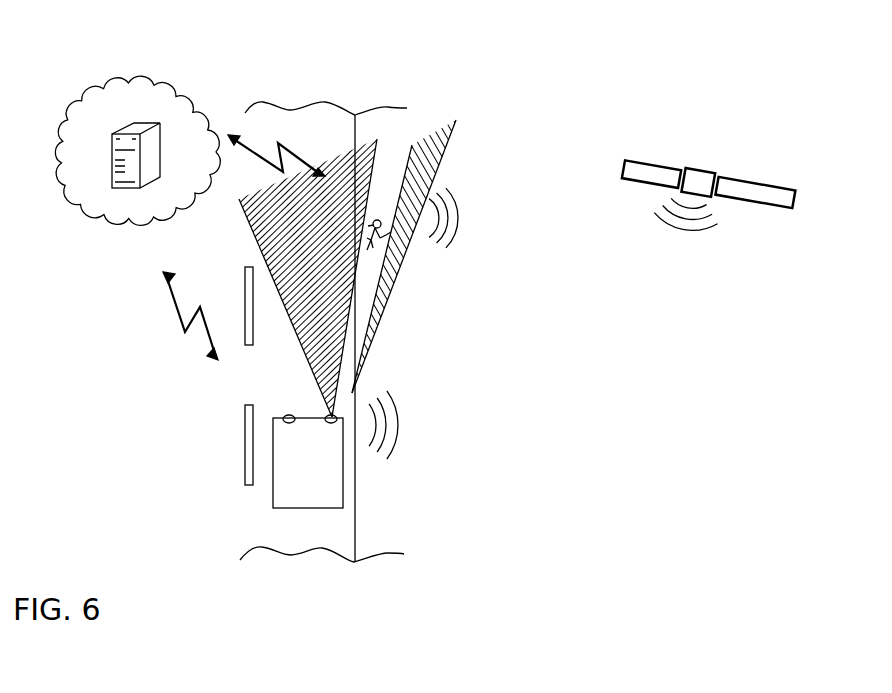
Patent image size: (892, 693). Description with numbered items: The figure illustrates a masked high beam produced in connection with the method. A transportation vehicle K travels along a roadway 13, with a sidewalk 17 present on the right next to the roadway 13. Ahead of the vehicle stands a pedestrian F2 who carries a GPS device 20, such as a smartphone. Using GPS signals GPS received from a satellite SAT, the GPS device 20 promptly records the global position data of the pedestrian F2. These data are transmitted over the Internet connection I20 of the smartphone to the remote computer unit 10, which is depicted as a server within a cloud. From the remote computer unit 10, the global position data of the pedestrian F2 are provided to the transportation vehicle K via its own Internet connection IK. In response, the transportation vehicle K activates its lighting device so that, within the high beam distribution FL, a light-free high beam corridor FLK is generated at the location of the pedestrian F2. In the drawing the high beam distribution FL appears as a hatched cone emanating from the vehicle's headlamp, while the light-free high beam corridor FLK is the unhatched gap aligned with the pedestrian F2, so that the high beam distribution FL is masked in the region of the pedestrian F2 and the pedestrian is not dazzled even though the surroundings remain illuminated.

The remote computer unit 10 is at (148, 123).
The Internet connection I20 is at (294, 152).
The GPS device 20 is at (377, 208).
The satellite SAT is at (707, 178).
The pedestrian F2 is at (386, 236).
The light-free high beam corridor FLK is at (365, 296).
The high beam distribution FL is at (379, 326).
The GPS signals GPS is at (445, 253).
The Internet connection IK is at (208, 330).
The transportation vehicle K is at (273, 490).
The sidewalk 17 is at (366, 473).
The roadway 13 is at (335, 533).